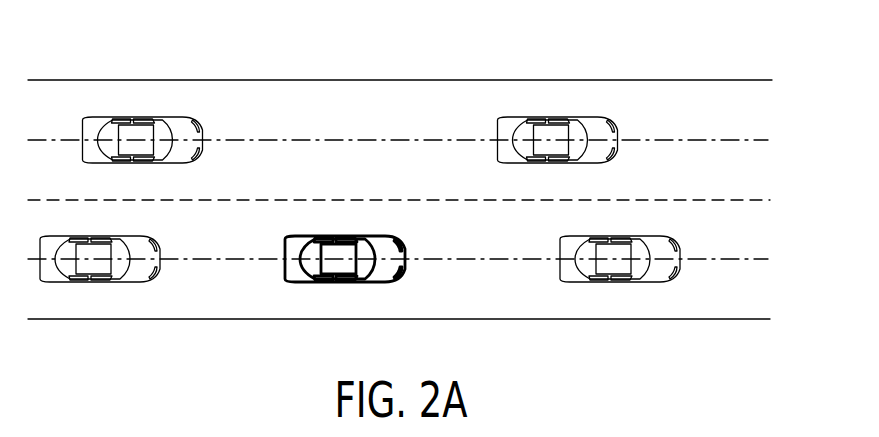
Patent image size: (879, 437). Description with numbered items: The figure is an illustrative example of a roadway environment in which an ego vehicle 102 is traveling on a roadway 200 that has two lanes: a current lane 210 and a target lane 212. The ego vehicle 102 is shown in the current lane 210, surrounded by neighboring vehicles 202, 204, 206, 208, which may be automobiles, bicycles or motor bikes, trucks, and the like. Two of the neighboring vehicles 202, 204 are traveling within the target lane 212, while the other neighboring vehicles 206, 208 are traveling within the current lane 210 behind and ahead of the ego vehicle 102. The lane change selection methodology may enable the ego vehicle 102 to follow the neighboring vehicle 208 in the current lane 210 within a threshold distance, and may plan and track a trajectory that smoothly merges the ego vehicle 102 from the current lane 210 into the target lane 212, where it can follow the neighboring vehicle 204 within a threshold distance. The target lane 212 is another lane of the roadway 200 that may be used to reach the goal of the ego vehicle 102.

The roadway 200 is at (725, 44).
The ego vehicle 102 is at (348, 284).
The neighboring vehicle 202 is at (142, 116).
The neighboring vehicle 204 is at (560, 116).
The neighboring vehicle 206 is at (103, 284).
The neighboring vehicle 208 is at (623, 284).
The current lane 210 is at (778, 313).
The target lane 212 is at (782, 134).